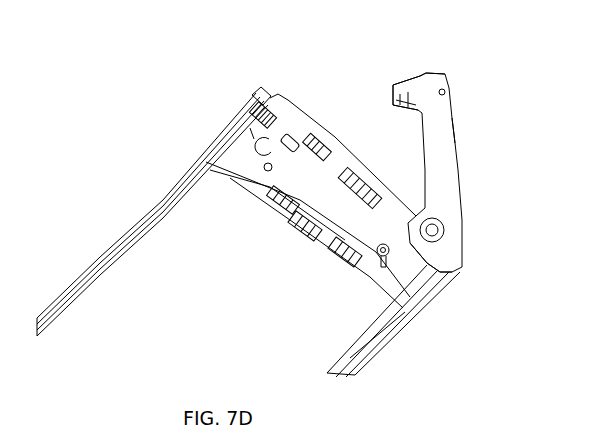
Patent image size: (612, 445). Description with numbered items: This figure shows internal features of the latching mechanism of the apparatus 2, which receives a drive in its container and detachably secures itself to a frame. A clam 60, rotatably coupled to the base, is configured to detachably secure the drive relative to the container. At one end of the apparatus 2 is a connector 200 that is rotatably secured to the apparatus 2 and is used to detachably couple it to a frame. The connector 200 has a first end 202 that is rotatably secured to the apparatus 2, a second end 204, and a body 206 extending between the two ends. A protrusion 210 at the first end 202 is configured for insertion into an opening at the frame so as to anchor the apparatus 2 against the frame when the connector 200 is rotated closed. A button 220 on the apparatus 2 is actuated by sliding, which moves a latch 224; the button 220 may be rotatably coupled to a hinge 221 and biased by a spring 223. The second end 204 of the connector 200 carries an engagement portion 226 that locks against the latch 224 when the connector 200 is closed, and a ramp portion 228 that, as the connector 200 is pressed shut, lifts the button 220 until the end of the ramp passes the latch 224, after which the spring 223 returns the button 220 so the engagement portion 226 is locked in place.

The apparatus 2 is at (175, 127).
The clam 60 is at (295, 215).
The connector 200 is at (458, 143).
The first end 202 is at (462, 250).
The second end 204 is at (449, 88).
The body 206 is at (453, 117).
The protrusion 210 is at (434, 273).
The button 220 is at (287, 64).
The hinge 221 is at (270, 135).
The spring 223 is at (252, 132).
The latch 224 is at (307, 121).
The engagement portion 226 is at (431, 71).
The ramp portion 228 is at (407, 80).